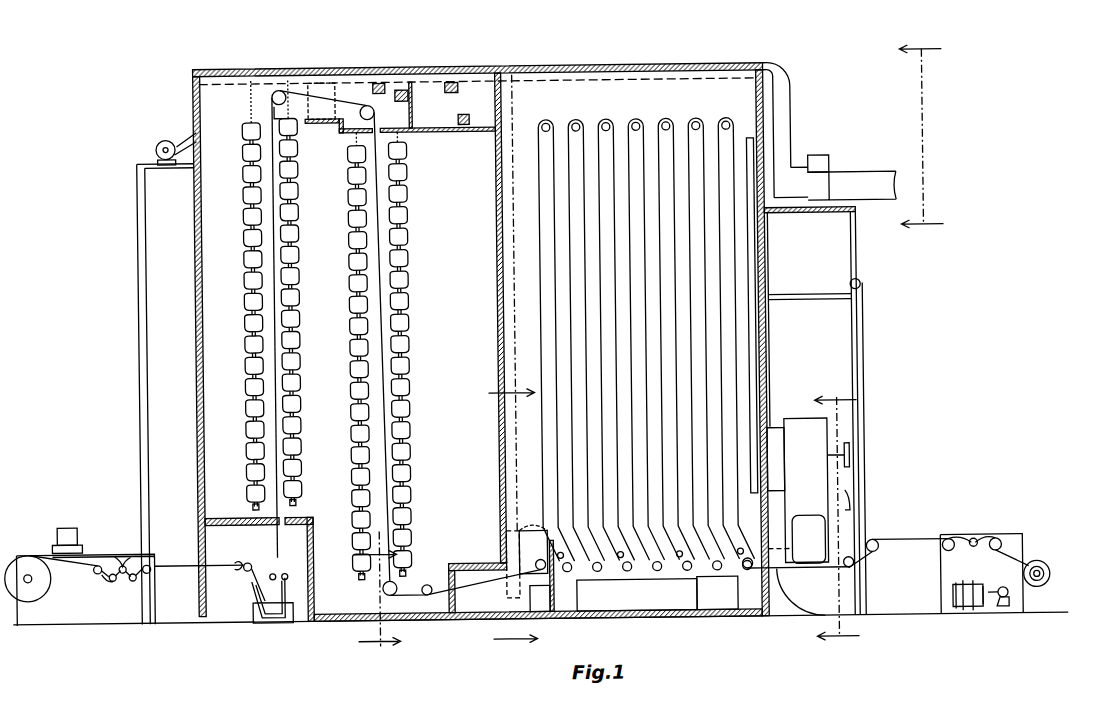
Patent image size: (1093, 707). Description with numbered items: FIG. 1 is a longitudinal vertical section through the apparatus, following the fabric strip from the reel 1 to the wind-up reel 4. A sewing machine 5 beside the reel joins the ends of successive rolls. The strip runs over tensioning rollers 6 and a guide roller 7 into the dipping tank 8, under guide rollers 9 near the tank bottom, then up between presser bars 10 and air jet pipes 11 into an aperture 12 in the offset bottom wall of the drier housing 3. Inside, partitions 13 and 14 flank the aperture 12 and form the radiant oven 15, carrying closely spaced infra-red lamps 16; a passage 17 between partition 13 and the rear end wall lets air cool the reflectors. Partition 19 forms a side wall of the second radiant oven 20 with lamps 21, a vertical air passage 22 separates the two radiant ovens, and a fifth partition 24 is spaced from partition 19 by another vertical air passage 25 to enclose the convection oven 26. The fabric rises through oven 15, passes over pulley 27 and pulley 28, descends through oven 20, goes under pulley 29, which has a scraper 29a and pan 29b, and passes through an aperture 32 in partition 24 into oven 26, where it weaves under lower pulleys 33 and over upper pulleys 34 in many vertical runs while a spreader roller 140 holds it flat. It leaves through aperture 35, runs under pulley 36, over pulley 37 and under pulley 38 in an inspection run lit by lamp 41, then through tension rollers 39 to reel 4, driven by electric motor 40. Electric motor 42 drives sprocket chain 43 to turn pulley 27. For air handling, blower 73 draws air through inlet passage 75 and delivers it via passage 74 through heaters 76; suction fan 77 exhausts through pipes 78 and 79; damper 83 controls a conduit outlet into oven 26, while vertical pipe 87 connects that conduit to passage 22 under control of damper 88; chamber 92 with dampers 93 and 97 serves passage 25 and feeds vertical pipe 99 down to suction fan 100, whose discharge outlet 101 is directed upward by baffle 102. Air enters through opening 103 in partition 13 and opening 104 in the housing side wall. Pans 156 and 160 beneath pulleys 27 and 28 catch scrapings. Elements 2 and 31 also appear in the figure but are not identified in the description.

The reel 1 is at (25, 550).
The yarn 2 is at (222, 582).
The drier housing 3 is at (200, 310).
The wind-up reel 4 is at (1040, 567).
The sewing machine 5 is at (68, 525).
The tensioning rollers 6 is at (88, 592).
The guide roller 7 is at (228, 552).
The dipping tank 8 is at (268, 630).
The guide rollers 9 is at (232, 606).
The presser bars 10 is at (311, 522).
The air jet pipes 11 is at (280, 572).
The aperture 12 is at (274, 528).
The partition 13 is at (246, 398).
The partition 14 is at (302, 401).
The radiant oven 15 is at (284, 299).
The infra-red lamps 16 is at (303, 240).
The passage 17 is at (220, 232).
The partition 19 is at (408, 252).
The second radiant oven 20 is at (408, 192).
The infra-red lamps 21 is at (353, 458).
The vertical air passage 22 is at (323, 352).
The fifth partition 24 is at (498, 292).
The vertical air passage 25 is at (457, 350).
The convection oven 26 is at (635, 115).
The pulley 27 is at (281, 88).
The pulley 28 is at (370, 104).
The pulley 29 is at (380, 588).
The scraper 29a is at (405, 578).
The pan 29b is at (402, 600).
The pulley 31 is at (426, 596).
The aperture 32 is at (478, 597).
The pulleys 33 is at (530, 560).
The pulleys 34 is at (548, 120).
The aperture 35 is at (778, 578).
The pulley 36 is at (852, 570).
The pulley 37 is at (862, 284).
The pulley 38 is at (878, 544).
The tension rollers 39 is at (992, 544).
The electric motor 40 is at (968, 615).
The lamp 41 is at (850, 495).
The electric motor 42 is at (157, 144).
The sprocket chain 43 is at (184, 134).
The blower 73 is at (800, 422).
The passage 74 is at (778, 622).
The inlet passage 75 is at (760, 266).
The heaters 76 is at (708, 614).
The suction fan 77 is at (822, 159).
The pipe 78 is at (795, 100).
The pipe 79 is at (778, 66).
The damper 83 is at (525, 70).
The vertical pipe 87 is at (314, 66).
The damper 88 is at (350, 66).
The chamber 92 is at (445, 132).
The damper 93 is at (455, 82).
The damper 97 is at (466, 114).
The vertical pipe 99 is at (508, 476).
The suction fan 100 is at (518, 520).
The discharge outlet 101 is at (548, 622).
The vertical baffle 102 is at (552, 612).
The opening 103 is at (262, 510).
The opening 104 is at (318, 628).
The spreader roller 140 is at (677, 559).
The pan 156 is at (350, 131).
The pan 160 is at (352, 134).